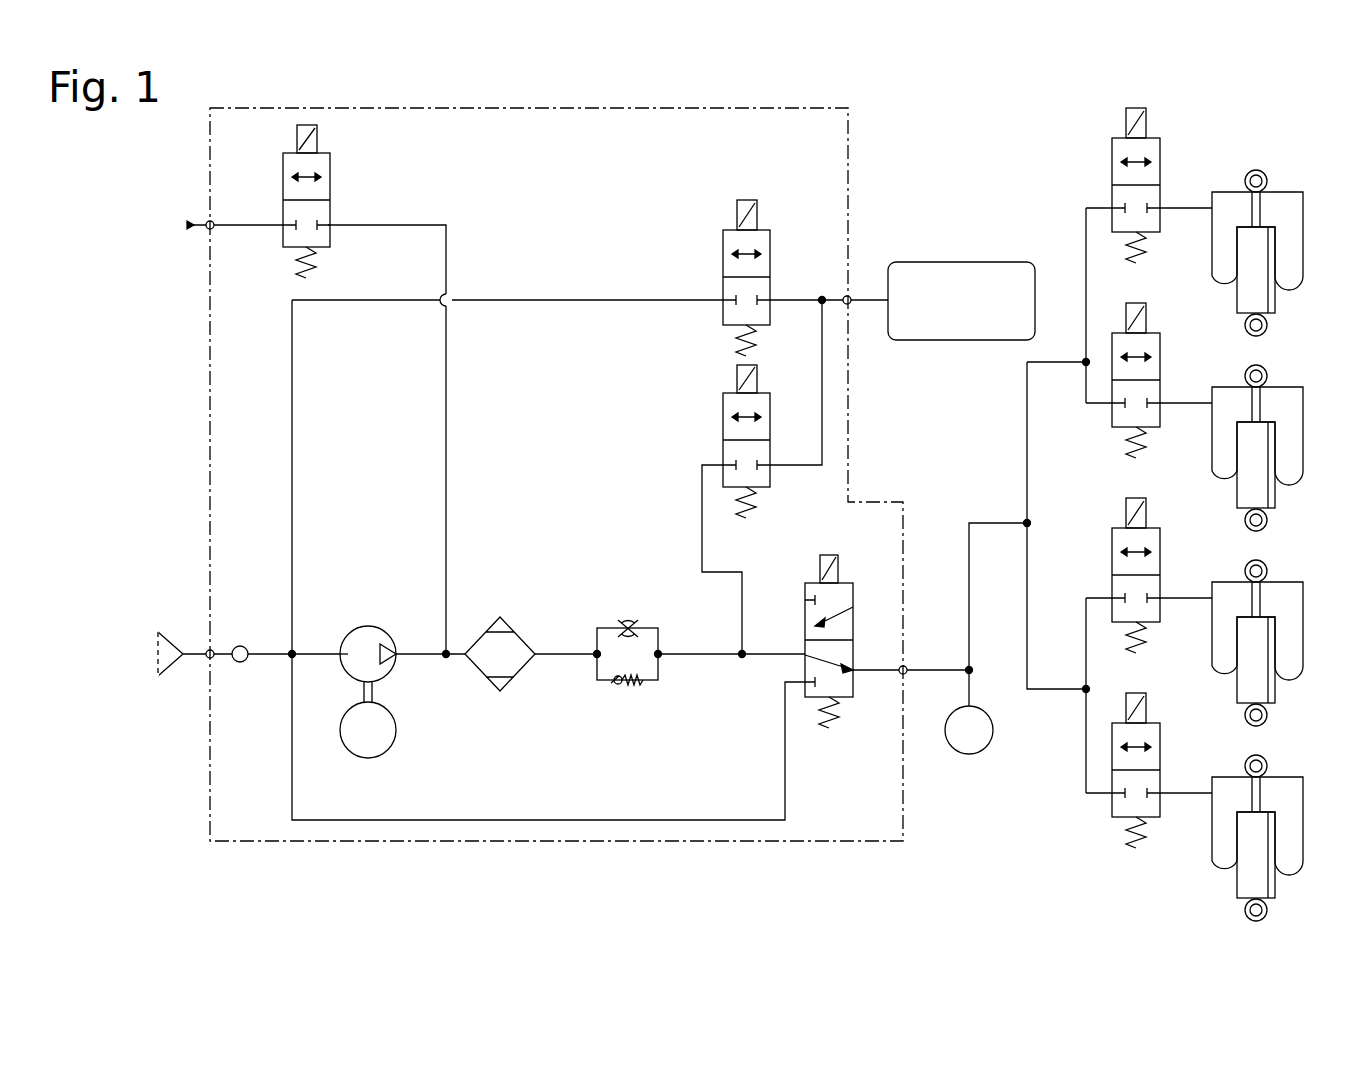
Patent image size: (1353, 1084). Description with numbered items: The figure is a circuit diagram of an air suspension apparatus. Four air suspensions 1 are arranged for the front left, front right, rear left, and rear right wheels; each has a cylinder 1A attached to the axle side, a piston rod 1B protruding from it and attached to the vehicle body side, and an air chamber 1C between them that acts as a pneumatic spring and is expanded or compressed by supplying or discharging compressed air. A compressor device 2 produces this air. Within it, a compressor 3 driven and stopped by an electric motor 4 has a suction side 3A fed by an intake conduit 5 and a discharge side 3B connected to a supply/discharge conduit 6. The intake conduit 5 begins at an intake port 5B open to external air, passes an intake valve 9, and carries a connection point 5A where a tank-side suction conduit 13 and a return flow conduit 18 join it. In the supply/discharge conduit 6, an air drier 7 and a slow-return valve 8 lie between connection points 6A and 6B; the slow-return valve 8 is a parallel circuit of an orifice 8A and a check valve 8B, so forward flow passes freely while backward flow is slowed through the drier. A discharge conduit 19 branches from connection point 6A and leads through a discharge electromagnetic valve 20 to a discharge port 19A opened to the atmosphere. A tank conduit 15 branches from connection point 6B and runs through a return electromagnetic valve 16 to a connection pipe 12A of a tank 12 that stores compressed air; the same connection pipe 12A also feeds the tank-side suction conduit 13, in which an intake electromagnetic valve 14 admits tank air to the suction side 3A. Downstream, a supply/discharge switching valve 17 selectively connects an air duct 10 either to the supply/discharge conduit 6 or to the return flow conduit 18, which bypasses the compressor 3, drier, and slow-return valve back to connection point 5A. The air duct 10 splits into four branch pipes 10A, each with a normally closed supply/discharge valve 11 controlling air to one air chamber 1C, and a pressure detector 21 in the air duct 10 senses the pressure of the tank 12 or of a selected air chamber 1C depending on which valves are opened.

The air suspension 1 is at (1282, 182).
The cylinder 1A is at (1248, 293).
The piston rod 1B is at (1262, 205).
The air chamber 1C is at (1225, 235).
The compressor device 2 is at (848, 165).
The compressor 3 is at (368, 626).
The suction side 3A is at (345, 650).
The discharge side 3B is at (397, 650).
The electric motor 4 is at (368, 758).
The intake conduit 5 is at (265, 662).
The connection point 5A is at (296, 662).
The intake port 5B is at (175, 632).
The supply/discharge conduit 6 is at (690, 650).
The connection point 6A is at (448, 662).
The connection point 6B is at (740, 662).
The air drier 7 is at (500, 617).
The slow-return valve 8 is at (598, 628).
The orifice 8A is at (632, 620).
The check valve 8B is at (626, 688).
The intake valve 9 is at (244, 640).
The air duct 10 is at (915, 665).
The branch pipe 10A is at (1086, 218).
The supply/discharge valve 11 is at (1112, 138).
The tank 12 is at (975, 262).
The connection pipe 12A is at (852, 290).
The tank-side suction conduit 13 is at (500, 296).
The intake electromagnetic valve 14 is at (723, 235).
The tank conduit 15 is at (702, 520).
The return electromagnetic valve 16 is at (723, 398).
The supply/discharge switching valve 17 is at (812, 583).
The return flow conduit 18 is at (503, 818).
The discharge conduit 19 is at (446, 435).
The discharge port 19A is at (187, 235).
The discharge electromagnetic valve 20 is at (283, 200).
The pressure detector 21 is at (970, 754).